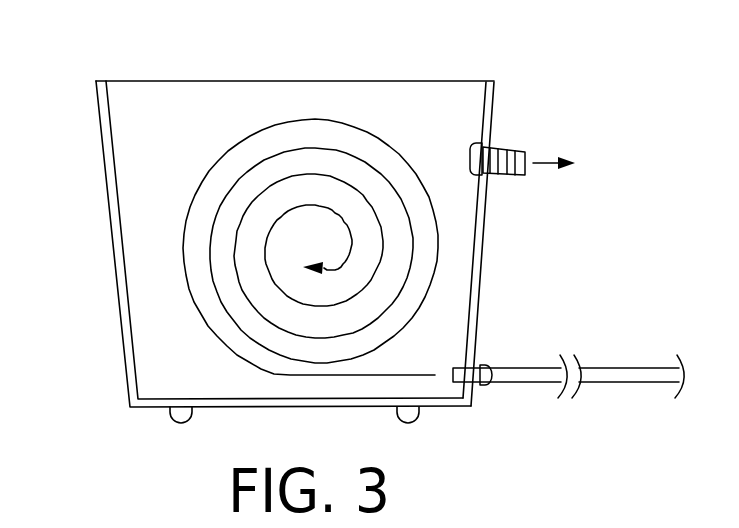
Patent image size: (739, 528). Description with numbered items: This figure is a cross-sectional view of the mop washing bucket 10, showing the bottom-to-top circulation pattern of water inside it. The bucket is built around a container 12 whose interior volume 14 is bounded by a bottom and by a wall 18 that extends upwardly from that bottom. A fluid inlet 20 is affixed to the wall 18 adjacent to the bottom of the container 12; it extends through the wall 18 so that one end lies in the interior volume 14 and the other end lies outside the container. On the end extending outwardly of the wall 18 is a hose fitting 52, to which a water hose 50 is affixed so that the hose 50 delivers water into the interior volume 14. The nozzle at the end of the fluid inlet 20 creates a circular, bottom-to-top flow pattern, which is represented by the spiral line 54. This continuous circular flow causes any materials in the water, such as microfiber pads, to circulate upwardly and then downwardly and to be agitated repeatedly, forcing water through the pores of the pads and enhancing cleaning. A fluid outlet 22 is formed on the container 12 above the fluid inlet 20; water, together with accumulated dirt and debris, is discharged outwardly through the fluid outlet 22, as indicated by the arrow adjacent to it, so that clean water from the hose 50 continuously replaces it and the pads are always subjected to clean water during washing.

The mop washing bucket 10 is at (552, 70).
The container 12 is at (112, 240).
The interior volume 14 is at (416, 96).
The wall 18 is at (483, 256).
The fluid inlet 20 is at (483, 367).
The fluid outlet 22 is at (520, 150).
The water hose 50 is at (617, 368).
The hose fitting 52 is at (490, 386).
The line 54 is at (207, 172).